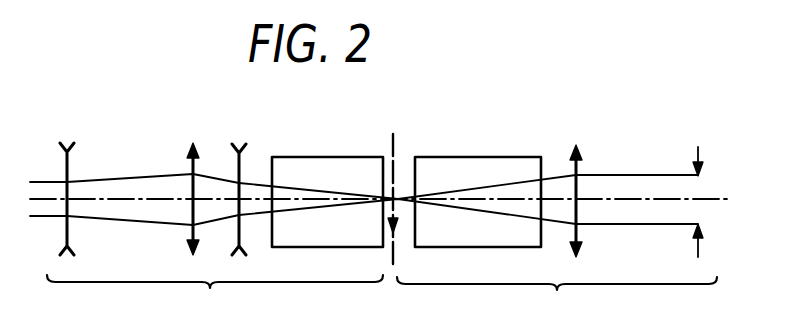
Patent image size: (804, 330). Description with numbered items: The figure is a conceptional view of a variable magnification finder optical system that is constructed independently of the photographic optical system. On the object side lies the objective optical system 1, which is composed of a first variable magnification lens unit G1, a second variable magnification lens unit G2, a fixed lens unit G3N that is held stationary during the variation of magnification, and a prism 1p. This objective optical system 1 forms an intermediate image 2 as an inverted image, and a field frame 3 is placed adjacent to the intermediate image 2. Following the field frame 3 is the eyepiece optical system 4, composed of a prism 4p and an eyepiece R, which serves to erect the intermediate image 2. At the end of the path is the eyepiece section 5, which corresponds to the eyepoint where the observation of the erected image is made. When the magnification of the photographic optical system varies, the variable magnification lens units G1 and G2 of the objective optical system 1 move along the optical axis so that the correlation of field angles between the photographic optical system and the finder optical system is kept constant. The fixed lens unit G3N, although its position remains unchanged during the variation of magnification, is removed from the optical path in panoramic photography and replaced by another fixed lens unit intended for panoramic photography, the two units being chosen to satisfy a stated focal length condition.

The objective optical system 1 is at (215, 298).
The intermediate image 2 is at (397, 176).
The field frame 3 is at (394, 146).
The eyepiece optical system 4 is at (557, 299).
The eyepiece section 5 is at (700, 157).
The prism 1p is at (310, 157).
The prism 4p is at (480, 157).
The first variable magnification lens unit G1 is at (63, 157).
The second variable magnification lens unit G2 is at (190, 165).
The fixed lens unit G3N is at (243, 165).
The eyepiece R is at (580, 168).